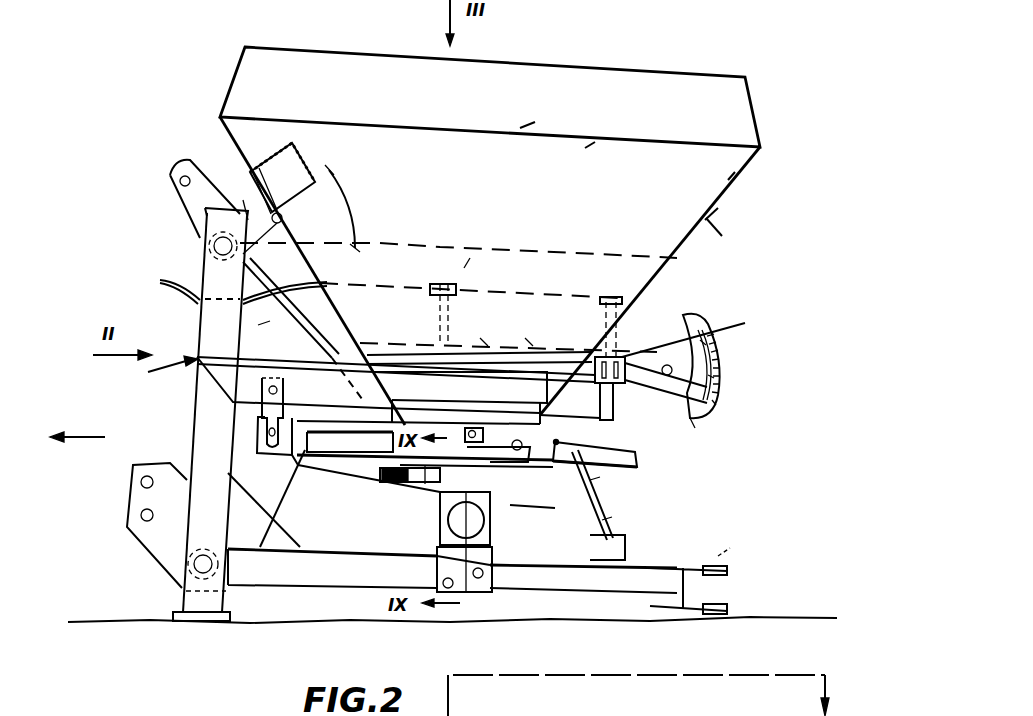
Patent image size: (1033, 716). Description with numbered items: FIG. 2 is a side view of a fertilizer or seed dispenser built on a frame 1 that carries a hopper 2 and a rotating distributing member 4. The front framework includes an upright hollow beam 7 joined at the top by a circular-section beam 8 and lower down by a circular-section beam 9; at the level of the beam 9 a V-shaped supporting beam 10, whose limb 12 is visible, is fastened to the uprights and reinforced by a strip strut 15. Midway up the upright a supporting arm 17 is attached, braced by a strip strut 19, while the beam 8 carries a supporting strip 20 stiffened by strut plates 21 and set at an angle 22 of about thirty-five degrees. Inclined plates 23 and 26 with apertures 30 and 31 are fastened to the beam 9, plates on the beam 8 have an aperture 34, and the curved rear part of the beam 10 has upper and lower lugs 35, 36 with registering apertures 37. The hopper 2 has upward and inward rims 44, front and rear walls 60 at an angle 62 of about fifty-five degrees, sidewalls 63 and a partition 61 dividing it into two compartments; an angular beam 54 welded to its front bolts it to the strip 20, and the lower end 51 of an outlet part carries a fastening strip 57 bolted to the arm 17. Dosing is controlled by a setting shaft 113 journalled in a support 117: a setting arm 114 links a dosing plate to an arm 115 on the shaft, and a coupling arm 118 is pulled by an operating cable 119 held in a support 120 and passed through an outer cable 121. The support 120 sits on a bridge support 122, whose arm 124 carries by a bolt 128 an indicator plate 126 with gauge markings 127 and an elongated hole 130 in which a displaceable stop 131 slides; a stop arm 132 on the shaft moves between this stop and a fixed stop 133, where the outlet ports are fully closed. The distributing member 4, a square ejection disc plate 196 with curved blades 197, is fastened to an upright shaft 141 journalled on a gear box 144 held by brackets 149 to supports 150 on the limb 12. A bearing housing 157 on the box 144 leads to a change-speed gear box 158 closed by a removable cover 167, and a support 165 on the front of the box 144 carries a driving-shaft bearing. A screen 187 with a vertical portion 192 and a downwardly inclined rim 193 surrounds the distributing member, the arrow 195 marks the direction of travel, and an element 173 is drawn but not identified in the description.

The frame 1 is at (165, 371).
The hopper 2 is at (228, 63).
The distributing member 4 is at (650, 463).
The hollow beam 7 is at (196, 318).
The circular-section beam 8 is at (210, 249).
The circular-section beam 9 is at (175, 567).
The V-shaped supporting beam 10 is at (580, 600).
The limb 12 is at (300, 575).
The strip strut 15 is at (262, 523).
The supporting arm 17 is at (282, 352).
The strip strut 19 is at (261, 325).
The supporting strip 20 is at (283, 217).
The strut plate 21 is at (263, 242).
The angle 22 is at (352, 208).
The inclined plate 23 is at (173, 189).
The inclined plate 26 is at (145, 530).
The aperture 30 is at (140, 480).
The aperture 31 is at (140, 514).
The aperture 34 is at (180, 183).
The upper lug 35 is at (705, 565).
The lower lug 36 is at (730, 604).
The registering aperture 37 is at (733, 541).
The rim 44 is at (532, 125).
The lower end 51 is at (362, 344).
The angular cross-section beam 54 is at (240, 196).
The fastening strip 57 is at (398, 352).
The front and rear walls 60 is at (727, 177).
The partition 61 is at (462, 258).
The angle 62 is at (725, 217).
The sidewall 63 is at (583, 146).
The setting shaft 113 is at (630, 347).
The setting arm 114 is at (588, 410).
The arm 115 is at (620, 400).
The support 117 is at (588, 348).
The coupling arm 118 is at (616, 290).
The operating cable 119 is at (508, 288).
The support 120 is at (437, 324).
The outer cable 121 is at (160, 281).
The bridge support 122 is at (474, 330).
The arm 124 is at (532, 330).
The indicator plate 126 is at (692, 320).
The gauge markings 127 is at (738, 375).
The bolt 128 is at (668, 362).
The elongated hole 130 is at (712, 328).
The displaceable stop 131 is at (716, 372).
The stop arm 132 is at (722, 385).
The fixed stop 133 is at (695, 425).
The upright shaft 141 is at (438, 505).
The gear box 144 is at (440, 538).
The bracket 149 is at (440, 572).
The support 150 is at (510, 597).
The bearing housing 157 is at (530, 540).
The change-speed gear box 158 is at (625, 550).
The support 165 is at (392, 510).
The removable cover 167 is at (612, 508).
The rod 173 is at (385, 488).
The screen 187 is at (255, 424).
The vertical portion 192 is at (258, 446).
The inclined rim 193 is at (270, 488).
The arrow 195 is at (100, 420).
The ejection disc plate 196 is at (648, 470).
The curved blade 197 is at (648, 432).